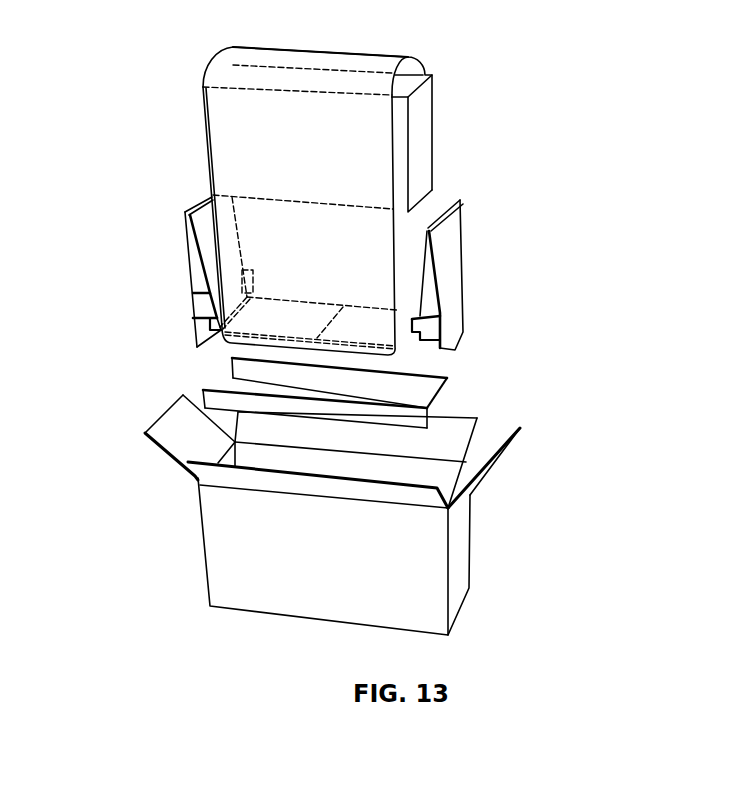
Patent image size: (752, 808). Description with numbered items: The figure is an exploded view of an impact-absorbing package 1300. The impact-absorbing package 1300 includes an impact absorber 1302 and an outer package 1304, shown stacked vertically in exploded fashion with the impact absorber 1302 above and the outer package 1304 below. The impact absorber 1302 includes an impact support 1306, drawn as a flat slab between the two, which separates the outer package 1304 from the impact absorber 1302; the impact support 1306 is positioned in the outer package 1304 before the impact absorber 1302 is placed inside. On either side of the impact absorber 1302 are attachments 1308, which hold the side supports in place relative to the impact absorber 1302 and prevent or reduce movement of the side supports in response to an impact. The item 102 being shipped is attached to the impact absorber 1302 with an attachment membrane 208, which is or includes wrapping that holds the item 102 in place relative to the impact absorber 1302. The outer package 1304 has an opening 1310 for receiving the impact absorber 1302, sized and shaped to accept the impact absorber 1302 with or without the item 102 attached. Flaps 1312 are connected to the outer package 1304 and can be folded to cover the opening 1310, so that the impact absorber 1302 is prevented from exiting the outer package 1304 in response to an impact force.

The impact-absorbing package 1300 is at (102, 124).
The item 102 is at (427, 138).
The attachment membrane 208 is at (333, 77).
The impact absorber 1302 is at (457, 265).
The attachments 1308 is at (198, 310).
The impact support 1306 is at (448, 392).
The outer package 1304 is at (460, 530).
The opening 1310 is at (435, 445).
The flaps 1312 is at (513, 452).